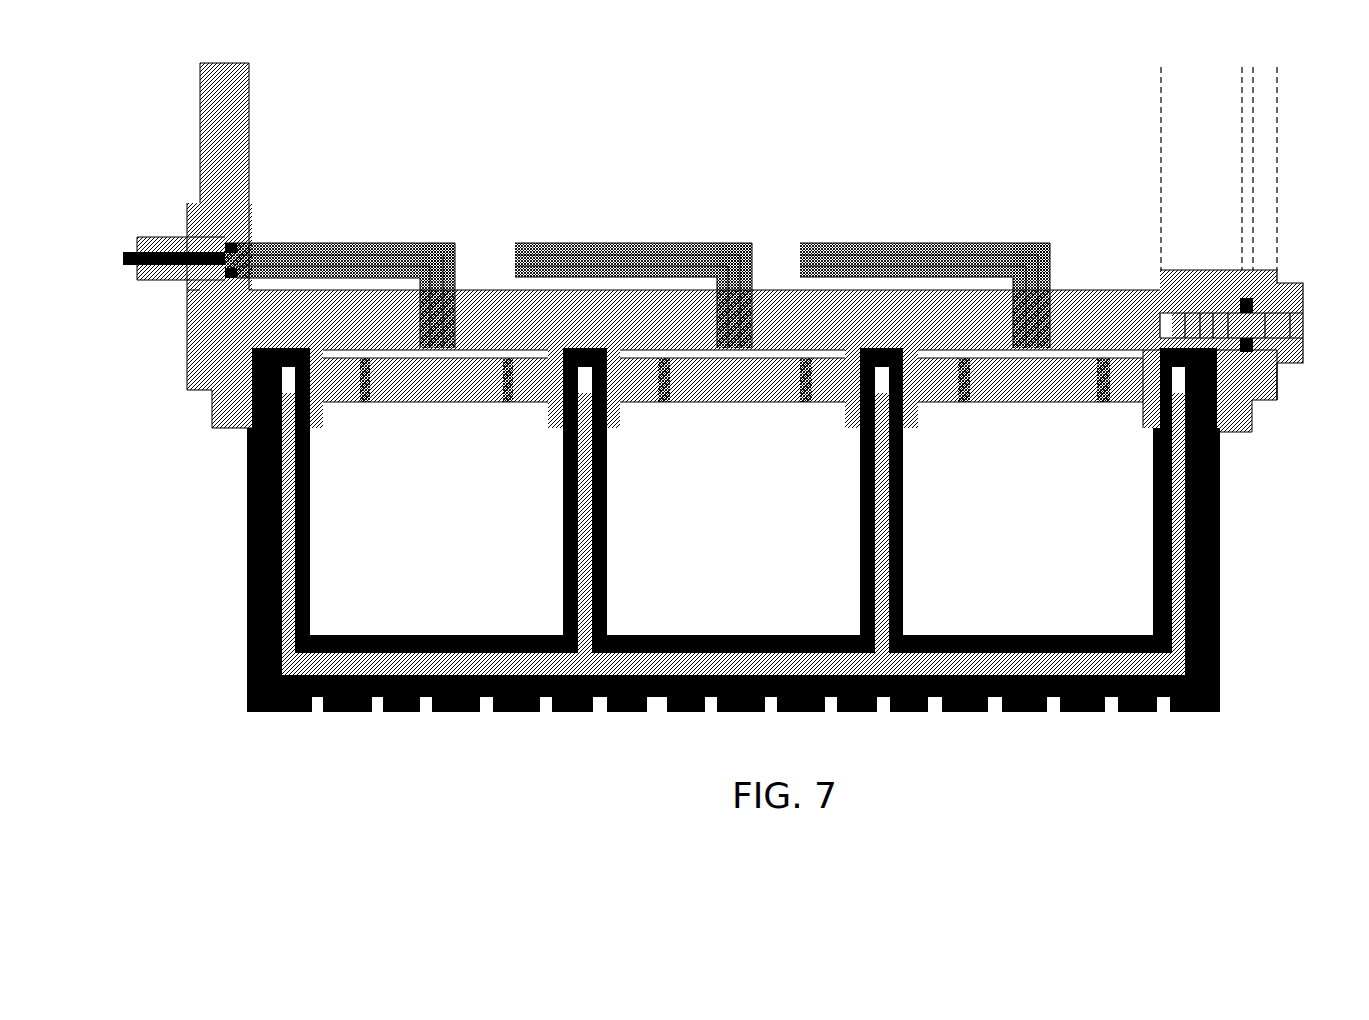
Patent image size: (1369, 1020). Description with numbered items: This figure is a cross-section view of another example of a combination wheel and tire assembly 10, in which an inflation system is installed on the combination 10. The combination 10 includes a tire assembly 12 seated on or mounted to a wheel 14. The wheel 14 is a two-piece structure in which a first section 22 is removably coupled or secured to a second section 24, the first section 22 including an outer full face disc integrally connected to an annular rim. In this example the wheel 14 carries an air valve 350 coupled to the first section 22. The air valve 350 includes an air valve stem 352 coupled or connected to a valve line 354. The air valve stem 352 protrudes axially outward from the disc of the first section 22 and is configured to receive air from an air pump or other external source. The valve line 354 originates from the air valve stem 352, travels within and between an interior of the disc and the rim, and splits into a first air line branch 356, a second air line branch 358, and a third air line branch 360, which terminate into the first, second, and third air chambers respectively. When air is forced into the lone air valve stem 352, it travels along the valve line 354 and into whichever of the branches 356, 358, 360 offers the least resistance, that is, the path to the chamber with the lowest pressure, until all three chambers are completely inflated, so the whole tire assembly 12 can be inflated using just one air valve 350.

The combination wheel and tire assembly 10 is at (120, 630).
The tire assembly 12 is at (428, 722).
The wheel 14 is at (188, 157).
The first section 22 is at (250, 102).
The second section 24 is at (1278, 153).
The air valve 350 is at (674, 203).
The air valve stem 352 is at (143, 283).
The valve line 354 is at (343, 242).
The first air line branch 356 is at (458, 280).
The second air line branch 358 is at (753, 282).
The third air line branch 360 is at (1050, 282).